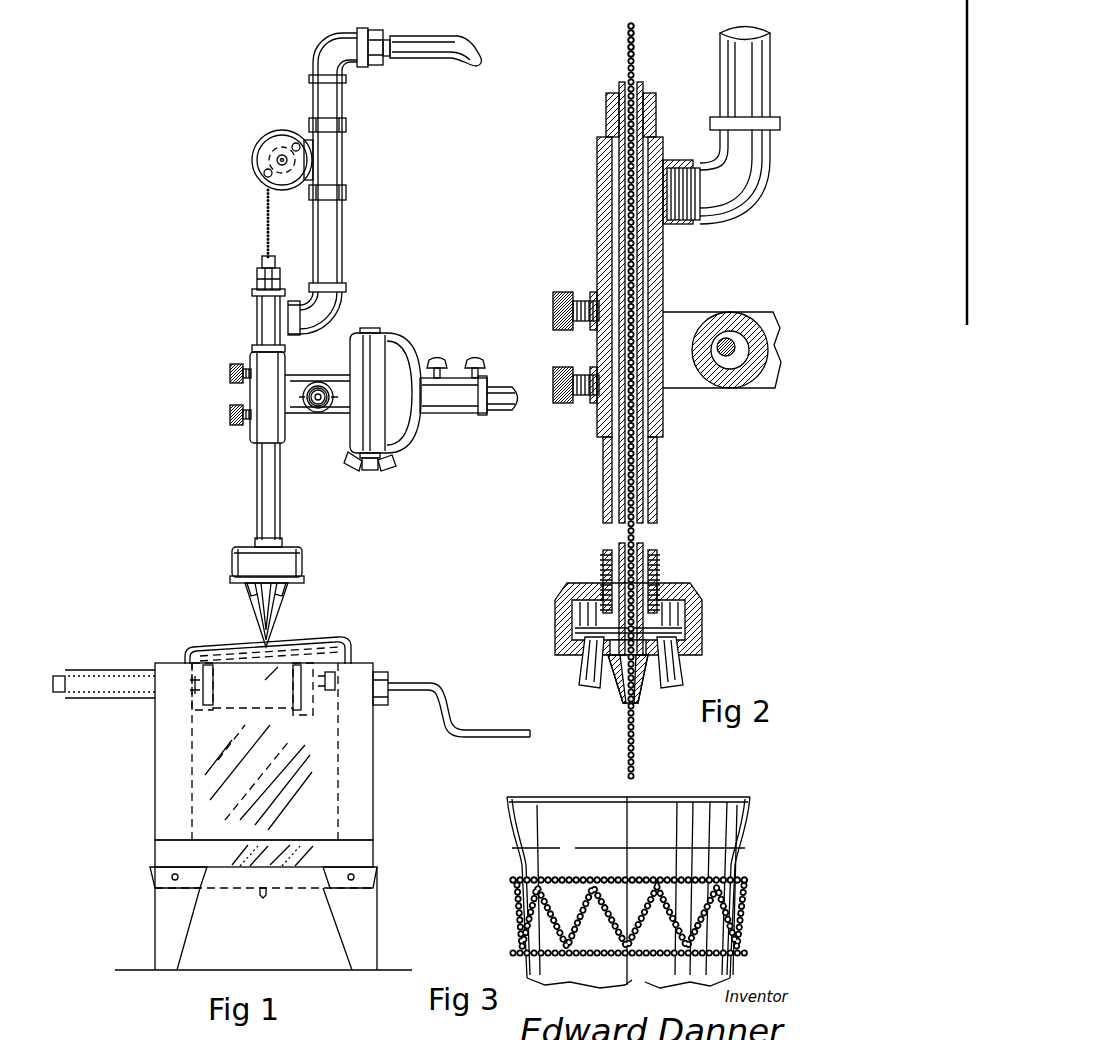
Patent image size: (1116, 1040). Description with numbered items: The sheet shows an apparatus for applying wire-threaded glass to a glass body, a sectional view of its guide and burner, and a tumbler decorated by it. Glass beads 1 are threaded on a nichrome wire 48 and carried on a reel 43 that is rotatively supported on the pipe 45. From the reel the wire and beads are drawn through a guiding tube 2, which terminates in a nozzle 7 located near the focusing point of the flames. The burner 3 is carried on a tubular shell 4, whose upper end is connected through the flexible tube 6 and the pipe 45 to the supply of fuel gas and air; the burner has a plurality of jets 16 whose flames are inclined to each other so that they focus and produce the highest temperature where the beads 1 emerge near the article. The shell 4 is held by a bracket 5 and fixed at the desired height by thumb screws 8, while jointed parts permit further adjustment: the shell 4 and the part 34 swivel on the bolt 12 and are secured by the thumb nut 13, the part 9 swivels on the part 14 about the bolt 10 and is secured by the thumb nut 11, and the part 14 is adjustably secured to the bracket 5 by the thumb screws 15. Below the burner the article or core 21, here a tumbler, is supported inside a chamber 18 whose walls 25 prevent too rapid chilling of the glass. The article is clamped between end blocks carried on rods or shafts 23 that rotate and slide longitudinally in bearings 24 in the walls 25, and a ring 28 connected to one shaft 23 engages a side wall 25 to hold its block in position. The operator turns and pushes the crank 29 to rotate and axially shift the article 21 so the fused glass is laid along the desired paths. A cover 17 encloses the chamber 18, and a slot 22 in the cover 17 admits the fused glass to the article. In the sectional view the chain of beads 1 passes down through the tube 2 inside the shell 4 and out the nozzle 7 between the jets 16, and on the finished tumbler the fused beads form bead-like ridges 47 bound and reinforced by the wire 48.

In FIG. 1, the glass beads 1 is at (264, 232).
In FIG. 2, the glass beads 1 is at (636, 75).
In FIG. 3, the glass beads 1 is at (740, 945).
In FIG. 1, the tube 2 is at (274, 262).
In FIG. 2, the tube 2 is at (620, 202).
In FIG. 1, the burner 3 is at (293, 572).
In FIG. 2, the burner 3 is at (700, 638).
In FIG. 1, the shell 4 is at (270, 503).
In FIG. 2, the shell 4 is at (656, 462).
In FIG. 1, the bracket 5 is at (503, 412).
In FIG. 1, the tube 6 is at (436, 41).
In FIG. 1, the nozzle 7 is at (256, 603).
In FIG. 2, the nozzle 7 is at (615, 702).
In FIG. 1, the thumb screws 8 is at (232, 374).
In FIG. 2, the thumb screws 8 is at (553, 307).
In FIG. 1, the part 9 is at (368, 401).
In FIG. 2, the part 9 is at (775, 392).
In FIG. 1, the bolt 10 is at (371, 472).
In FIG. 1, the thumb nut 11 is at (386, 462).
In FIG. 1, the bolt 12 is at (322, 410).
In FIG. 2, the bolt 12 is at (728, 358).
In FIG. 1, the thumb nut 13 is at (319, 386).
In FIG. 1, the part 14 is at (430, 407).
In FIG. 1, the thumb screws 15 is at (437, 358).
In FIG. 1, the jets 16 is at (290, 592).
In FIG. 2, the jets 16 is at (590, 676).
In FIG. 1, the cover 17 is at (340, 641).
In FIG. 1, the chamber 18 is at (330, 808).
In FIG. 1, the article 21 is at (306, 643).
In FIG. 3, the article 21 is at (735, 838).
In FIG. 1, the slot 22 is at (228, 652).
In FIG. 1, the shafts 23 is at (60, 668).
In FIG. 1, the bearings 24 is at (392, 699).
In FIG. 1, the walls 25 is at (357, 758).
In FIG. 1, the ring 28 is at (342, 651).
In FIG. 1, the crank 29 is at (450, 703).
In FIG. 1, the part 34 is at (257, 432).
In FIG. 2, the part 34 is at (600, 422).
In FIG. 1, the reel 43 is at (262, 157).
In FIG. 1, the pipe 45 is at (332, 252).
In FIG. 2, the pipe 45 is at (750, 98).
In FIG. 3, the ridges 47 is at (748, 878).
In FIG. 2, the wire 48 is at (637, 31).
In FIG. 3, the wire 48 is at (515, 928).